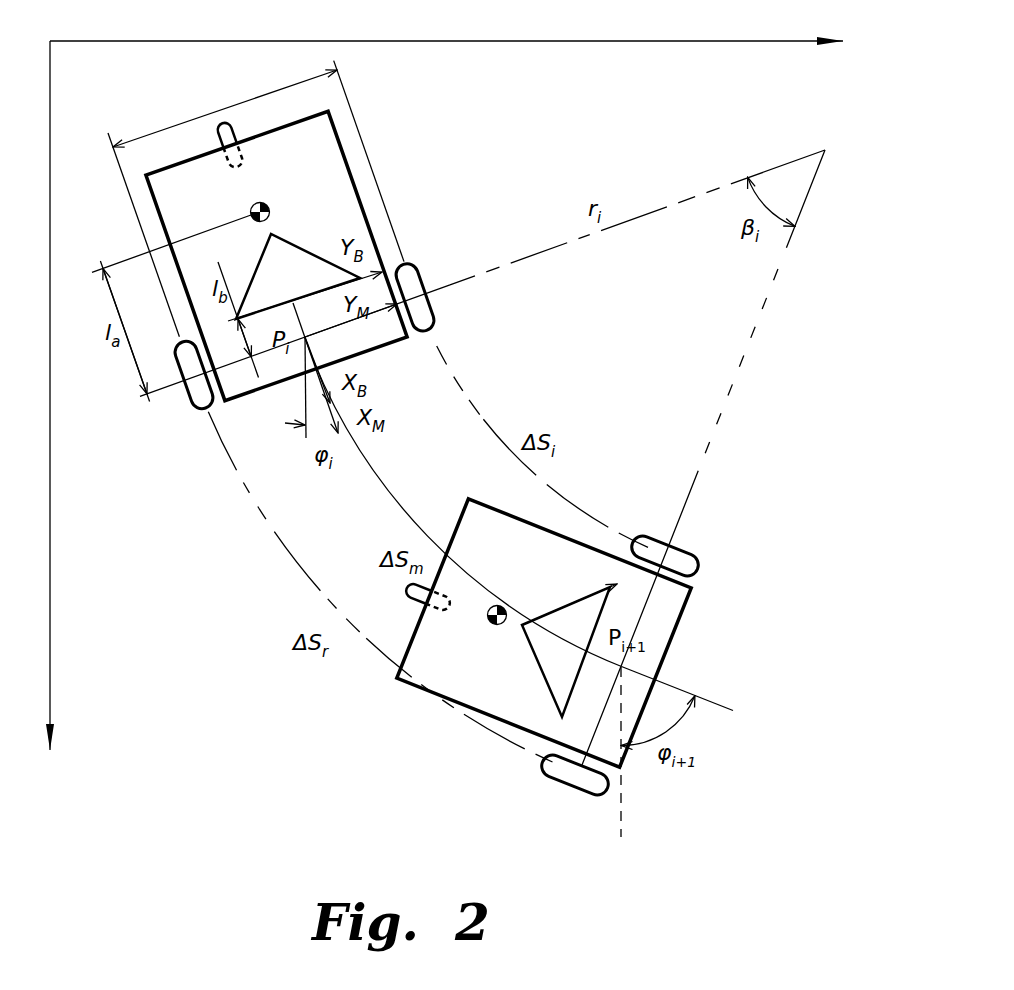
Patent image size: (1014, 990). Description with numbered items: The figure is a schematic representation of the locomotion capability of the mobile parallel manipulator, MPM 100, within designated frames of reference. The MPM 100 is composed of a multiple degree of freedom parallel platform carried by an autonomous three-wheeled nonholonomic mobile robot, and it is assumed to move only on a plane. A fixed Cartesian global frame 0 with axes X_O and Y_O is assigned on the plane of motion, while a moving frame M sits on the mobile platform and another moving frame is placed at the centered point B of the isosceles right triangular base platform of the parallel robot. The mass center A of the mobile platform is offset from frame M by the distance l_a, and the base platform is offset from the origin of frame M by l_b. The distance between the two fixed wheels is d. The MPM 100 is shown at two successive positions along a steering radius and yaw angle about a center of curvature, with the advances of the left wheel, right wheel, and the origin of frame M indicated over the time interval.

The MPM 100 is at (365, 177).
The global frame 0 is at (432, 376).
The mass center A is at (385, 410).
The centered point of the base platform B is at (426, 475).
The distance between the two fixed wheels d is at (256, 199).